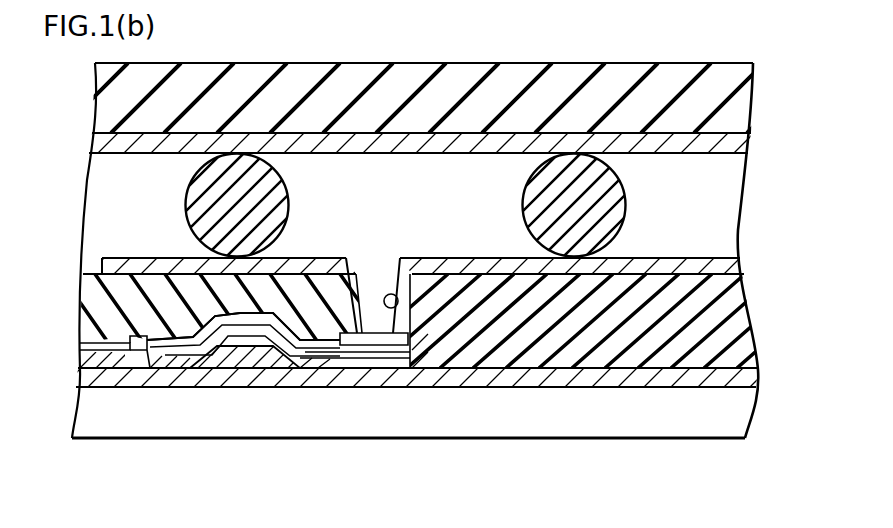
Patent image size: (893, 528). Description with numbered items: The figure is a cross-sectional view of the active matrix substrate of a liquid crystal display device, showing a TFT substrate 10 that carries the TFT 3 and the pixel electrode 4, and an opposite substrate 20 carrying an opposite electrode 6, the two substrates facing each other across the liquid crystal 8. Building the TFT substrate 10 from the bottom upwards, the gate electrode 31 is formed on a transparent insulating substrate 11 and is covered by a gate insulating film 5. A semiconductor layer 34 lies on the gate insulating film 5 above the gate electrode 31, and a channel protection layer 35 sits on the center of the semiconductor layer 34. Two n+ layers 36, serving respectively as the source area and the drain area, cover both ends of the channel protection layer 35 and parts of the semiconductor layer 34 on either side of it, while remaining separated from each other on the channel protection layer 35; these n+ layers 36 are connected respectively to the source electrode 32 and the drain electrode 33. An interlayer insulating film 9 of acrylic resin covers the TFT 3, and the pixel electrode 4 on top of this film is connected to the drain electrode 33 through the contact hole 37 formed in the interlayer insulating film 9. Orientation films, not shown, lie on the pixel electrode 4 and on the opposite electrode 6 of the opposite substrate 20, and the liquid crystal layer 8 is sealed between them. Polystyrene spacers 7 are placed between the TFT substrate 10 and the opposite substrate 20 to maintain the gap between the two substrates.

The opposite substrate 20 is at (746, 99).
The opposite electrode 6 is at (740, 146).
The spacers 7 is at (192, 205).
The liquid crystal layer 8 is at (730, 196).
The pixel electrode 4 is at (730, 266).
The interlayer insulating film 9 is at (740, 328).
The TFT substrate 10 is at (795, 257).
The gate insulating film 5 is at (742, 376).
The transparent insulating substrate 11 is at (728, 411).
The TFT 3 is at (200, 322).
The source electrode 32 is at (80, 345).
The gate electrode 31 is at (270, 356).
The drain electrode 33 is at (388, 358).
The semiconductor layer 34 is at (326, 352).
The channel protection layer 35 is at (250, 327).
The n+ layers 36 is at (132, 352).
The contact hole 37 is at (398, 306).